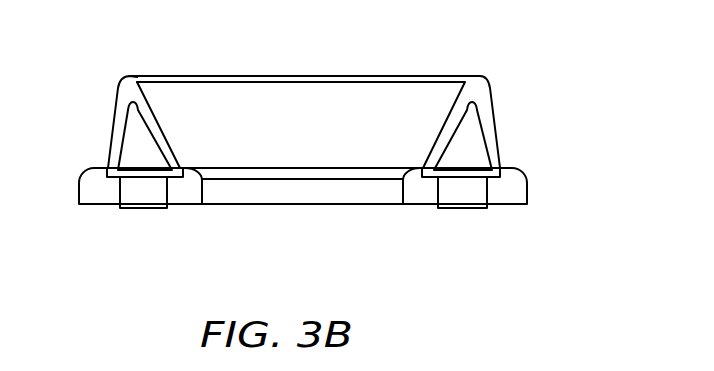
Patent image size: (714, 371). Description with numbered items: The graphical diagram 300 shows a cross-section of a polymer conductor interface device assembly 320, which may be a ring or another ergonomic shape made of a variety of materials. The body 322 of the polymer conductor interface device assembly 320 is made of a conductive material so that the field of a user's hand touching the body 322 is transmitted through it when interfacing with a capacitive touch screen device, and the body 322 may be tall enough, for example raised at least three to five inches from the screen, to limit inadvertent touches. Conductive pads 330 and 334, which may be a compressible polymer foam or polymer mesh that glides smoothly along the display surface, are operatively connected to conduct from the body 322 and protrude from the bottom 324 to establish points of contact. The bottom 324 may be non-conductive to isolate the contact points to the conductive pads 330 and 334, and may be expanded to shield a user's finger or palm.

The graphical diagram 300 is at (90, 29).
The polymer conductor interface device assembly 320 is at (115, 108).
The body 322 is at (492, 115).
The bottom 324 is at (527, 188).
The conductive pad 330 is at (143, 210).
The conductive pad 334 is at (460, 210).